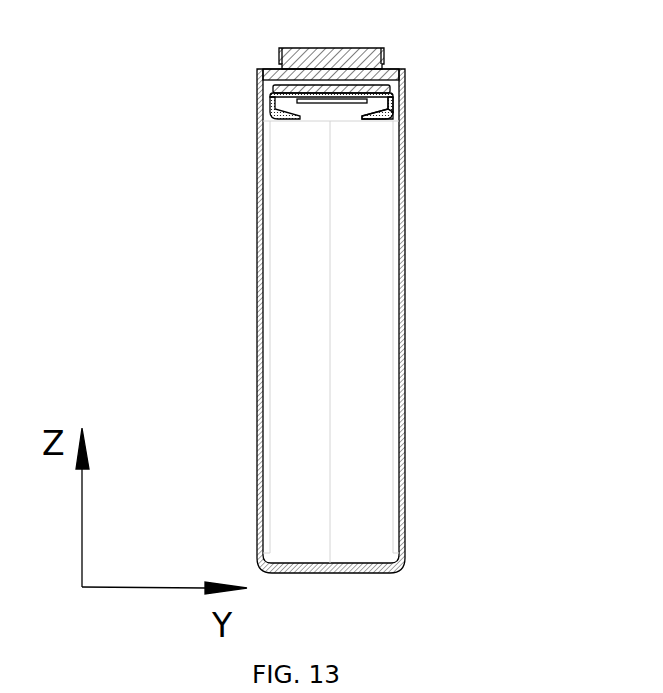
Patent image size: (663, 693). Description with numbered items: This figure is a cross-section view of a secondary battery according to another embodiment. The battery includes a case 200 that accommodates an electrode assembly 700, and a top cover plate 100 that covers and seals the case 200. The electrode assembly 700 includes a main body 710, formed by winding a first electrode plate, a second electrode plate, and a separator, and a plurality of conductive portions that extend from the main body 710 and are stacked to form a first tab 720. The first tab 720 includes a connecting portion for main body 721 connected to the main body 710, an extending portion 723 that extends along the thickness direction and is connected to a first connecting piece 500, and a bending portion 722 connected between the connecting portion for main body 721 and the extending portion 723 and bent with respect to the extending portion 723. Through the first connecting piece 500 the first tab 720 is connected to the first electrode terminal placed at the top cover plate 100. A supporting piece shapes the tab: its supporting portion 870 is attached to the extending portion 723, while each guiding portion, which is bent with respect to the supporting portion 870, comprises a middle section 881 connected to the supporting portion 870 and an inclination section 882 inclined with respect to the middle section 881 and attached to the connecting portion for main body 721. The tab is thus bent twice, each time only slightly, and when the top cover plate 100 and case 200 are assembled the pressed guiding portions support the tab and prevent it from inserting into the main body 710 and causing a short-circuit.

The top cover plate 100 is at (319, 43).
The first connecting piece 500 is at (300, 84).
The supporting portion 870 is at (384, 76).
The middle section 881 is at (392, 95).
The inclination section 882 is at (393, 118).
The first tab 720 is at (253, 96).
The connecting portion for main body 721 is at (273, 118).
The bending portion 722 is at (274, 97).
The extending portion 723 is at (277, 86).
The main body 710 is at (308, 325).
The electrode assembly 700 is at (331, 288).
The case 200 is at (403, 473).